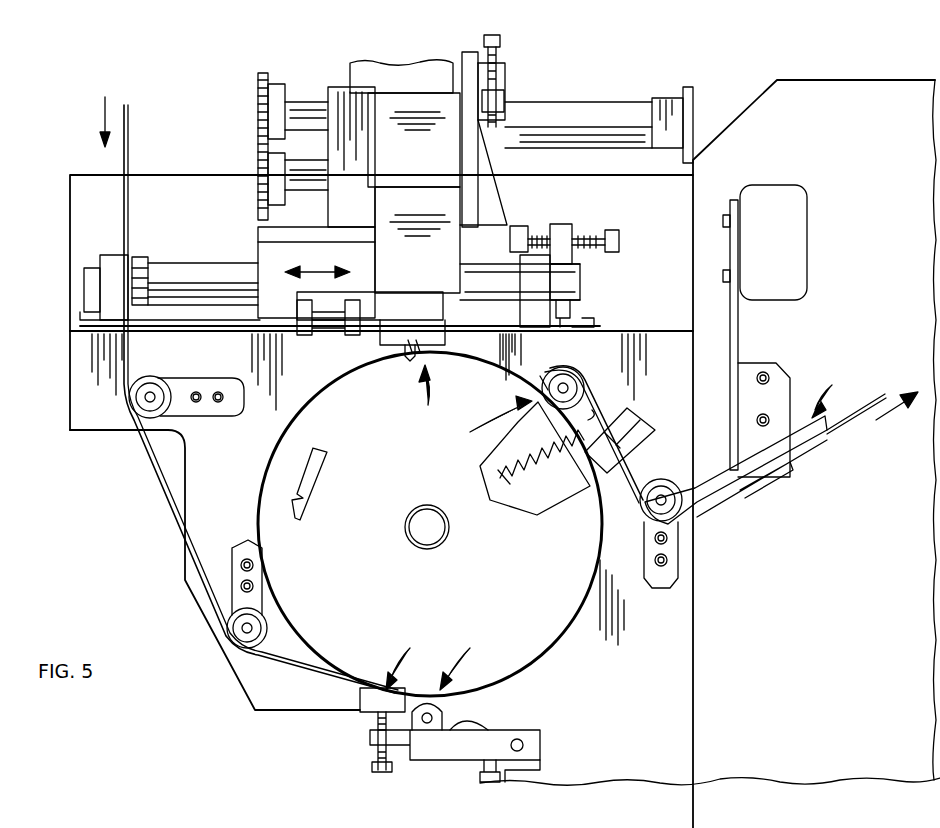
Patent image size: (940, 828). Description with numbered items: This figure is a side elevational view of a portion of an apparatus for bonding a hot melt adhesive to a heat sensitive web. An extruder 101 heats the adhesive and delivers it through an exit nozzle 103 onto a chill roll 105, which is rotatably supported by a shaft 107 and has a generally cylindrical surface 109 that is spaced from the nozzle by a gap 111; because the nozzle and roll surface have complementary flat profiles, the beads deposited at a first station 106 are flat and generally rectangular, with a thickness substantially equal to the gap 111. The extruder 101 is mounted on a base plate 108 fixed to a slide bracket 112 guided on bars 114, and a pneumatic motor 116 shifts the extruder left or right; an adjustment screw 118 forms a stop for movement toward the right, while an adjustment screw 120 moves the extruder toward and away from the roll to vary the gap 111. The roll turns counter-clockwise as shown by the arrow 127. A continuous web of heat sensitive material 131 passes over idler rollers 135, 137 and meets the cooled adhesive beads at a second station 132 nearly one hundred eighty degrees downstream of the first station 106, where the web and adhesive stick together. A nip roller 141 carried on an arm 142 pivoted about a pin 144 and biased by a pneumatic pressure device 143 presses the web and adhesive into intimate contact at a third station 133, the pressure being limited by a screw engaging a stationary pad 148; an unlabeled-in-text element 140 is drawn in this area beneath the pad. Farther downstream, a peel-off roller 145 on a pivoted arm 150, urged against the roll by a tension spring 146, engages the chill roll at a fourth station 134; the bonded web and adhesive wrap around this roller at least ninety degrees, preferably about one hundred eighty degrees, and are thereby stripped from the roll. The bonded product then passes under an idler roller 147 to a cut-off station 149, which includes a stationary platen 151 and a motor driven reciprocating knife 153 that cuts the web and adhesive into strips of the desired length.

The extruder 101 is at (440, 273).
The exit nozzle 103 is at (440, 347).
The chill roll 105 is at (446, 603).
The first station 106 is at (423, 394).
The roll shaft 107 is at (444, 540).
The base plate 108 is at (258, 250).
The cylindrical surface 109 is at (520, 380).
The gap 111 is at (400, 350).
The slide bracket 112 is at (345, 200).
The bars 114 is at (157, 268).
The pneumatic motor 116 is at (596, 108).
The adjustment screw 118 is at (582, 243).
The adjustment screw 120 is at (500, 78).
The arrow 127 is at (320, 466).
The web of heat sensitive material 131 is at (130, 152).
The second station 132 is at (416, 660).
The third station 133 is at (475, 660).
The fourth station 134 is at (492, 423).
The idler roller 135 is at (160, 378).
The idler roller 137 is at (270, 628).
The adjusting screw 140 is at (375, 764).
The nip roller 141 is at (450, 712).
The arm 142 is at (520, 732).
The pneumatic pressure device 143 is at (490, 772).
The pin 144 is at (524, 748).
The peel-off roller 145 is at (588, 385).
The tension spring 146 is at (528, 450).
The idler roller 147 is at (666, 478).
The stationary pad 148 is at (360, 698).
The cut-off station 149 is at (865, 397).
The pivoted arm 150 is at (630, 420).
The stationary platen 151 is at (805, 448).
The reciprocating knife 153 is at (740, 338).